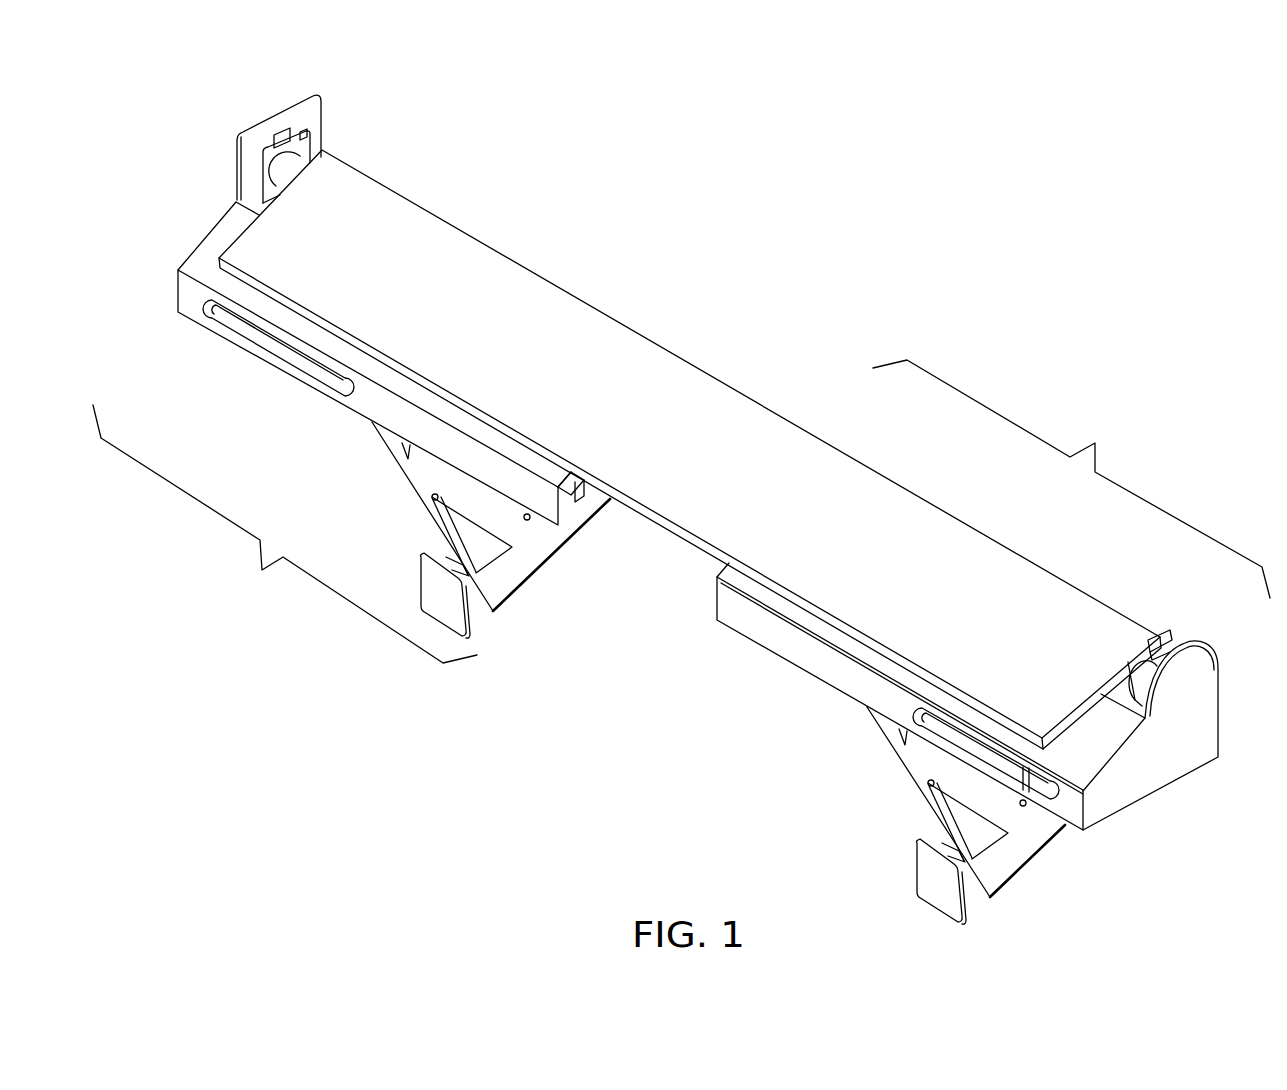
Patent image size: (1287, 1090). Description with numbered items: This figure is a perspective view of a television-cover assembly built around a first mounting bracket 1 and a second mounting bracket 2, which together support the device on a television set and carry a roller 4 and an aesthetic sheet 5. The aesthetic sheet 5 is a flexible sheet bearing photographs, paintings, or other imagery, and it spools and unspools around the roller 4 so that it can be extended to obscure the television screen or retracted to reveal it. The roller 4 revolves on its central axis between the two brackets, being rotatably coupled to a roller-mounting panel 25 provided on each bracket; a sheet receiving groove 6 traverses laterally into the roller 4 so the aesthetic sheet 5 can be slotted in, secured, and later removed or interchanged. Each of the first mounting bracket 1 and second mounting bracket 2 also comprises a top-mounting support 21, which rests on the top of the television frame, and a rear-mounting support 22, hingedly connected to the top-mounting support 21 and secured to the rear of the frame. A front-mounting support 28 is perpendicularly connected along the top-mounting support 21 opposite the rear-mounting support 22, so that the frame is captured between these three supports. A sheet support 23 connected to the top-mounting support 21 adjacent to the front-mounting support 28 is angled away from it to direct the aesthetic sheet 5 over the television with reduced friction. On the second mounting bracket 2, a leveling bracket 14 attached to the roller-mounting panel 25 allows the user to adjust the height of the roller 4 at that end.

The first mounting bracket 1 is at (285, 534).
The second mounting bracket 2 is at (1071, 479).
The roller 4 is at (330, 152).
The aesthetic sheet 5 is at (567, 323).
The sheet receiving groove 6 is at (1163, 643).
The leveling bracket 14 is at (316, 121).
The top-mounting support 21 is at (568, 490).
The rear-mounting support 22 is at (523, 570).
The sheet support 23 is at (208, 267).
The roller-mounting panel 25 is at (243, 147).
The front-mounting support 28 is at (360, 390).